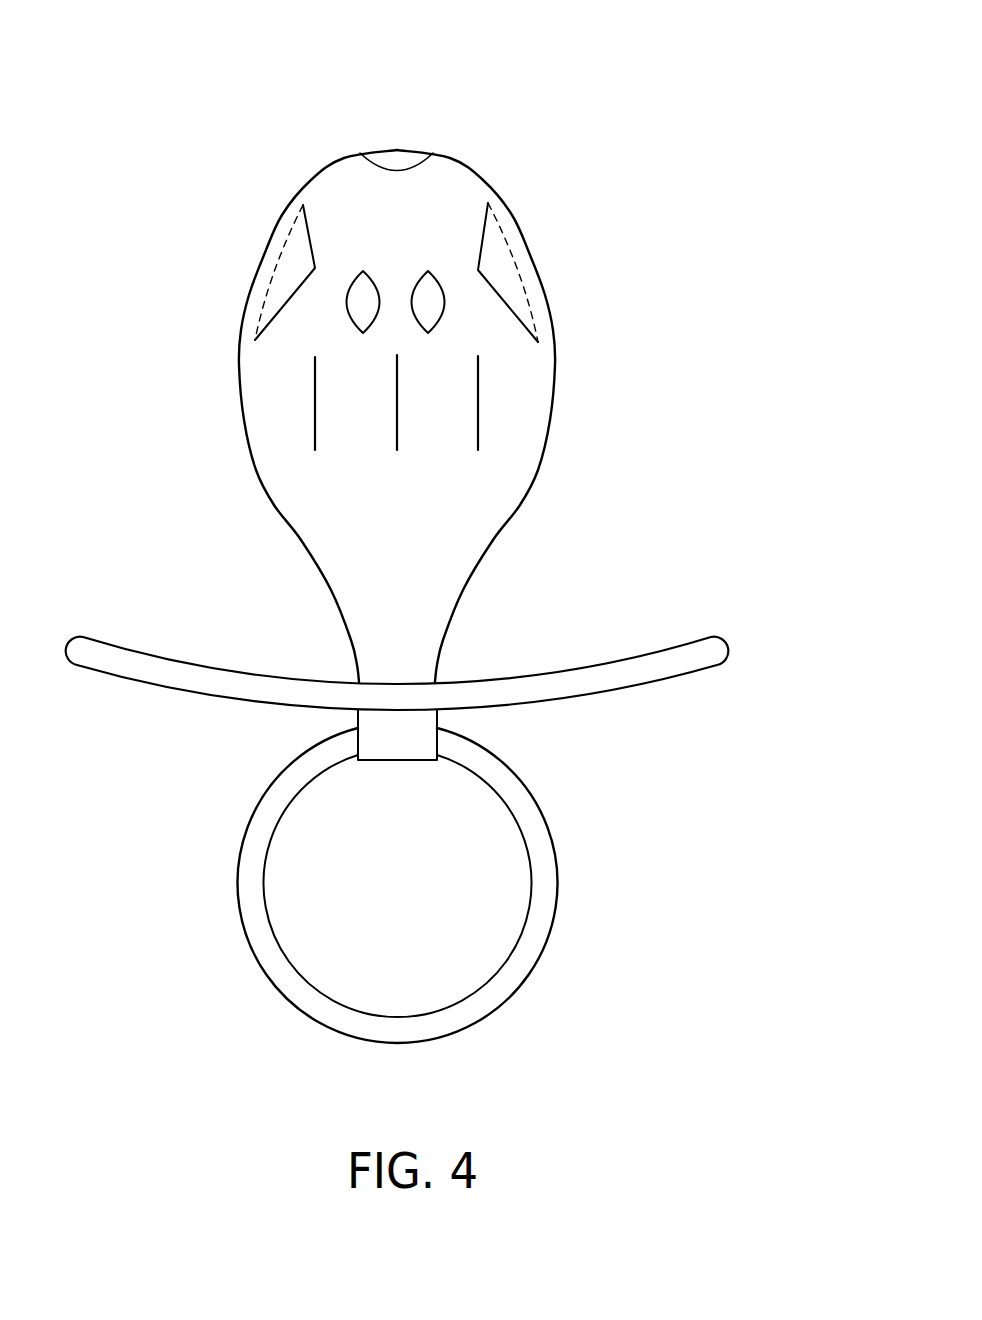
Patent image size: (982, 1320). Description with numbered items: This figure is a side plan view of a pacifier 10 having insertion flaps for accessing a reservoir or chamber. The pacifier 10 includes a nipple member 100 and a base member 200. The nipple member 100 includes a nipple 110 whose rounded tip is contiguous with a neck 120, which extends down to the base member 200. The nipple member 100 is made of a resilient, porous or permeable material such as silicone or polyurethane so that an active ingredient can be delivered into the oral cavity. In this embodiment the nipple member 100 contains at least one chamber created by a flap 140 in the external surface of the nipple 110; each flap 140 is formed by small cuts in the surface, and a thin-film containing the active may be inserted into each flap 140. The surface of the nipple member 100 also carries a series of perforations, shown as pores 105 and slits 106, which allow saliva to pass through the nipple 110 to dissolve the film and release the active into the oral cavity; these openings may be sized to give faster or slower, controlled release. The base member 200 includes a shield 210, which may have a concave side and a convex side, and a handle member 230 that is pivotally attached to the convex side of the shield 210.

The pacifier 10 is at (253, 132).
The nipple member 100 is at (592, 180).
The nipple 110 is at (557, 338).
The neck 120 is at (443, 650).
The flap 140 is at (482, 233).
The pores 105 is at (363, 305).
The slits 106 is at (397, 400).
The base member 200 is at (762, 635).
The shield 210 is at (138, 682).
The handle member 230 is at (538, 968).